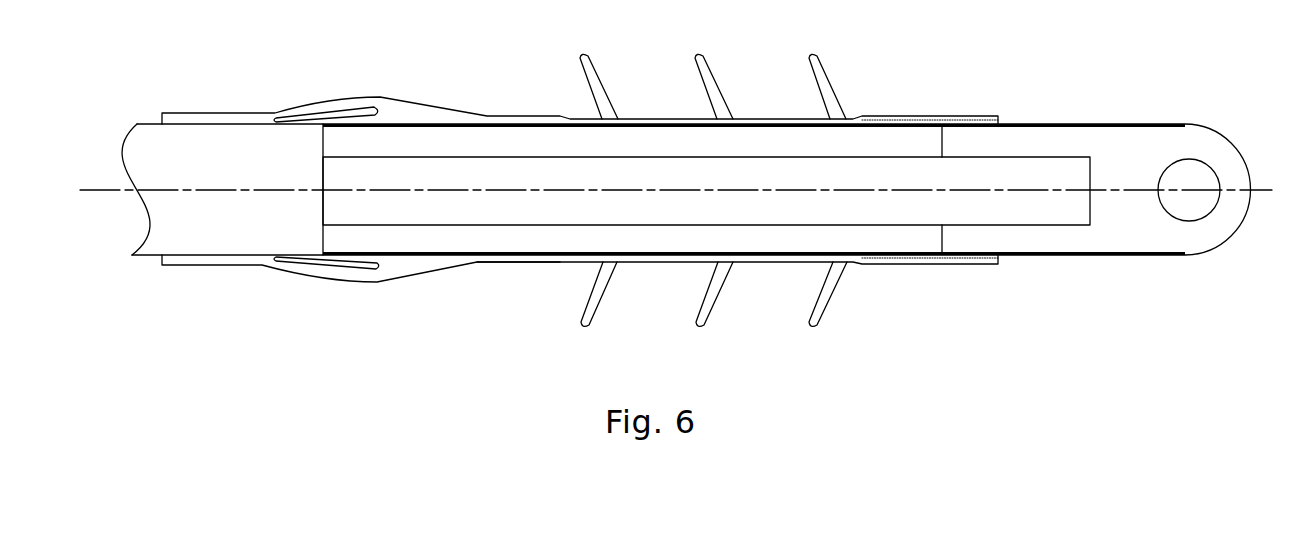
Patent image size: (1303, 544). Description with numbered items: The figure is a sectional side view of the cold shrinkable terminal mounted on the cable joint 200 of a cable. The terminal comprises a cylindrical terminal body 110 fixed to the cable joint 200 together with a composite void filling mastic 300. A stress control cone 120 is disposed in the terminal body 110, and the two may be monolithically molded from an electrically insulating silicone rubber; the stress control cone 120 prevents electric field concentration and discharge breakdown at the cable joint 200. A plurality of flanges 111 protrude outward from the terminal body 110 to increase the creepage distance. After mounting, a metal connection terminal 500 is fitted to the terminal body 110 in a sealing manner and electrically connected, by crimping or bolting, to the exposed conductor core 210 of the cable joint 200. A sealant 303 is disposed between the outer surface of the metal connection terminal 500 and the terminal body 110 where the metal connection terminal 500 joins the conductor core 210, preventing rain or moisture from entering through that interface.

The terminal body 110 is at (768, 118).
The flanges 111 is at (829, 82).
The stress control cone 120 is at (355, 120).
The cable joint 200 is at (430, 208).
The conductor core 210 is at (1022, 170).
The composite void filling mastic 300 is at (500, 262).
The sealant 303 is at (963, 257).
The metal connection terminal 500 is at (1128, 145).